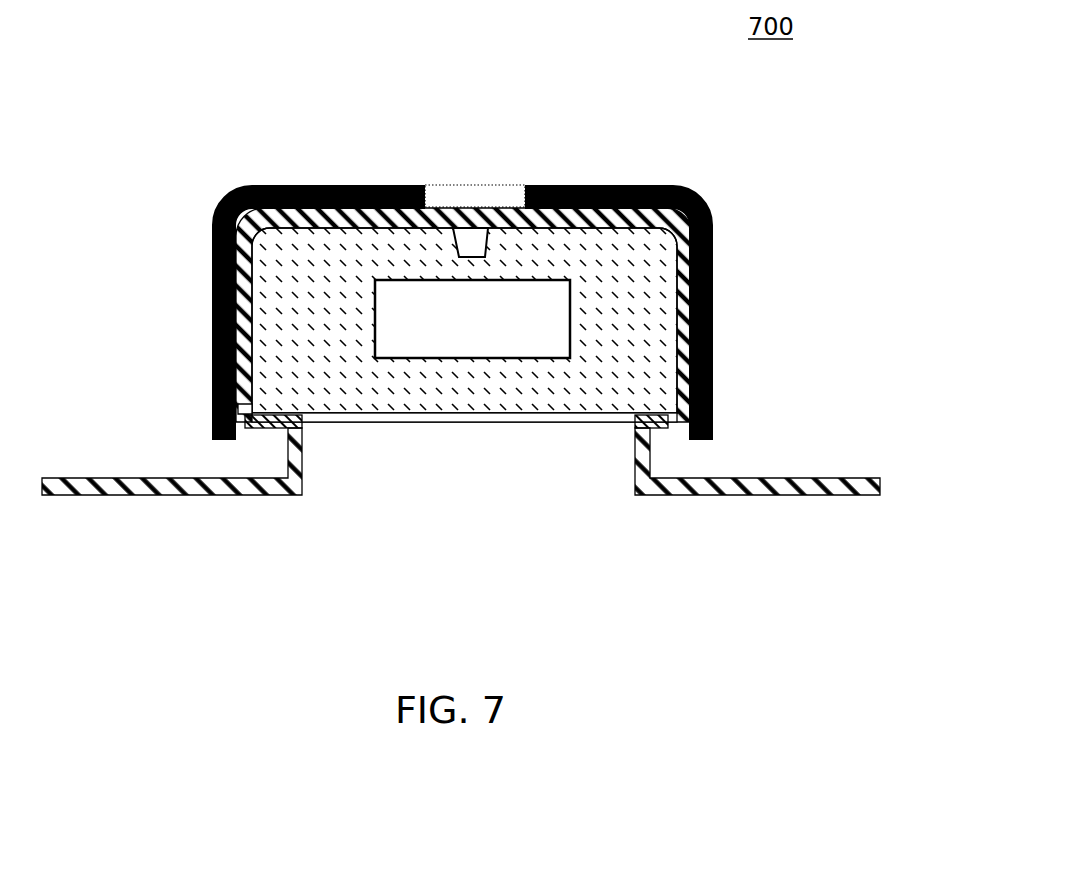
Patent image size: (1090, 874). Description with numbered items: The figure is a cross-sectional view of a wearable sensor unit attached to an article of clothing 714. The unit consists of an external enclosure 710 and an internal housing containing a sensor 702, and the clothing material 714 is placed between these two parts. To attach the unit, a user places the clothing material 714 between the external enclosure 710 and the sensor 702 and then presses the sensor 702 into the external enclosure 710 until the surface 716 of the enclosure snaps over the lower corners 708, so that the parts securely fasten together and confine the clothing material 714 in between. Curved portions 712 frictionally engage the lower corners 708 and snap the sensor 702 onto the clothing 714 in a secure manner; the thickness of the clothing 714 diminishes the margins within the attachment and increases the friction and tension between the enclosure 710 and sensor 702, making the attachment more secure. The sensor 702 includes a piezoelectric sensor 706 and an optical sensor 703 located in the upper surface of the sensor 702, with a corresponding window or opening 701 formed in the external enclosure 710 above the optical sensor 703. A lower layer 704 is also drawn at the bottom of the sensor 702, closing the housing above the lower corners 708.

The window or opening 701 is at (483, 181).
The sensor 702 is at (634, 319).
The optical sensor 703 is at (455, 241).
The bottom layer 704 is at (525, 426).
The piezoelectric sensor 706 is at (578, 302).
The lower corners 708 is at (272, 403).
The external enclosure 710 is at (208, 203).
The curved portions 712 is at (256, 416).
The article of clothing 714 is at (779, 472).
The surface 716 is at (208, 318).